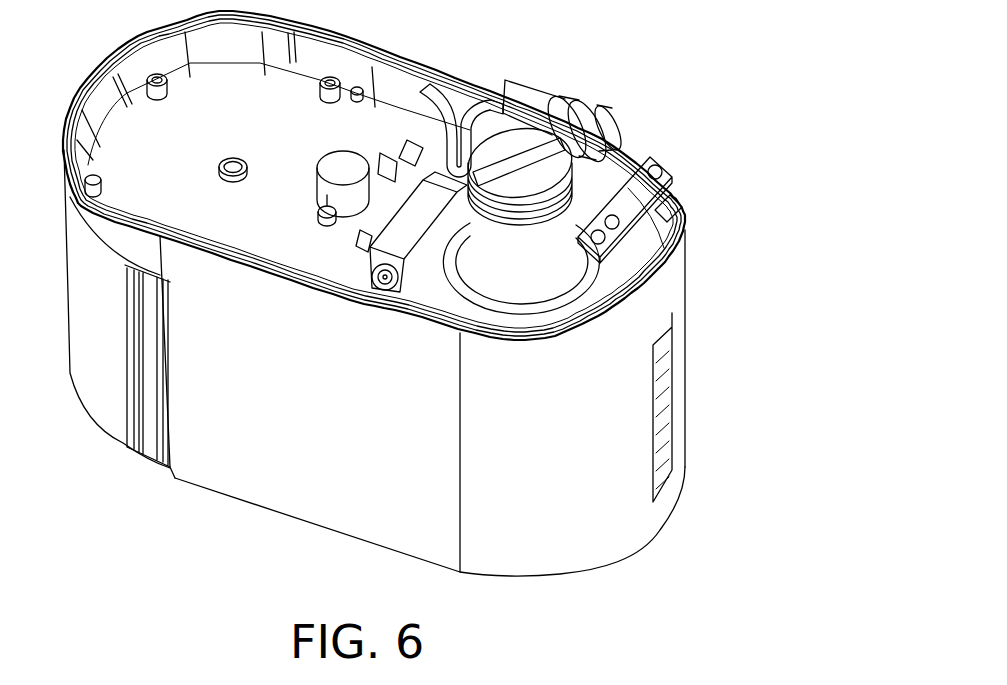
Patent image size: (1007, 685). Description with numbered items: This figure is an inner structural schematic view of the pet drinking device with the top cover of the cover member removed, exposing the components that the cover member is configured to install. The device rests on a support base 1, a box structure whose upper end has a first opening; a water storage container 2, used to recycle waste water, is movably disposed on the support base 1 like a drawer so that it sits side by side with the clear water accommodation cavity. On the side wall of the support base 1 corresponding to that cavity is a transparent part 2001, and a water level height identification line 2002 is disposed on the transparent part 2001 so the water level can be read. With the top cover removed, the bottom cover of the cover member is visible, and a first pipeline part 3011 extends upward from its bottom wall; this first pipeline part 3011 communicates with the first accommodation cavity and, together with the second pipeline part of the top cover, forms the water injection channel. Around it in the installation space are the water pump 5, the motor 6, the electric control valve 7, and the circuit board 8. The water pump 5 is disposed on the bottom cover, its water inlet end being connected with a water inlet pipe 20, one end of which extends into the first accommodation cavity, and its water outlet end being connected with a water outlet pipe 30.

The support base 1 is at (303, 503).
The water storage container 2 is at (678, 350).
The transparent part 2001 is at (673, 387).
The water level height identification line 2002 is at (660, 433).
The first pipeline part 3011 is at (520, 283).
The water pump 5 is at (538, 113).
The motor 6 is at (385, 262).
The electric control valve 7 is at (352, 165).
The circuit board 8 is at (592, 205).
The water inlet pipe 20 is at (480, 117).
The water outlet pipe 30 is at (338, 284).